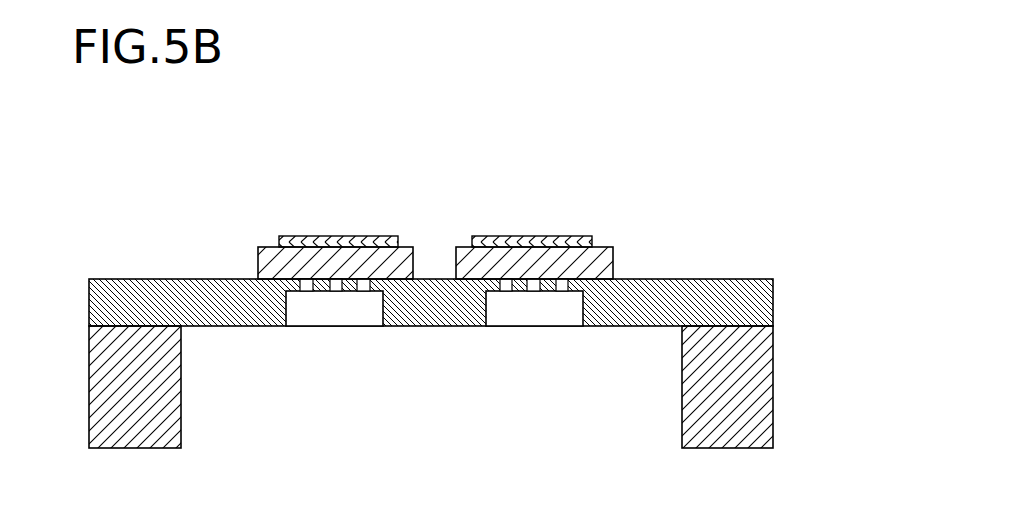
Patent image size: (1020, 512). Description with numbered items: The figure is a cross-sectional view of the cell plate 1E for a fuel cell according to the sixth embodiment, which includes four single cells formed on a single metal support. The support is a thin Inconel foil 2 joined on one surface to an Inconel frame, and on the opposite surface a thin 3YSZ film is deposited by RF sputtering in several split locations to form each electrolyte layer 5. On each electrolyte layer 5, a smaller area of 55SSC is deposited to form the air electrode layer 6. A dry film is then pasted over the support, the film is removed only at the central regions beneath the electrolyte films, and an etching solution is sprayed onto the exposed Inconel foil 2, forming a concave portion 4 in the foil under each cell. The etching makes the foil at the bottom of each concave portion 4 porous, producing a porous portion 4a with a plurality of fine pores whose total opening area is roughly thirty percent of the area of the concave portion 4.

The cell plate 1E is at (661, 165).
The Inconel foil 2 is at (717, 292).
The concave portion 4 is at (358, 310).
The porous portion 4a is at (320, 292).
The electrolyte layer 5 is at (408, 247).
The air electrode layer 6 is at (329, 240).